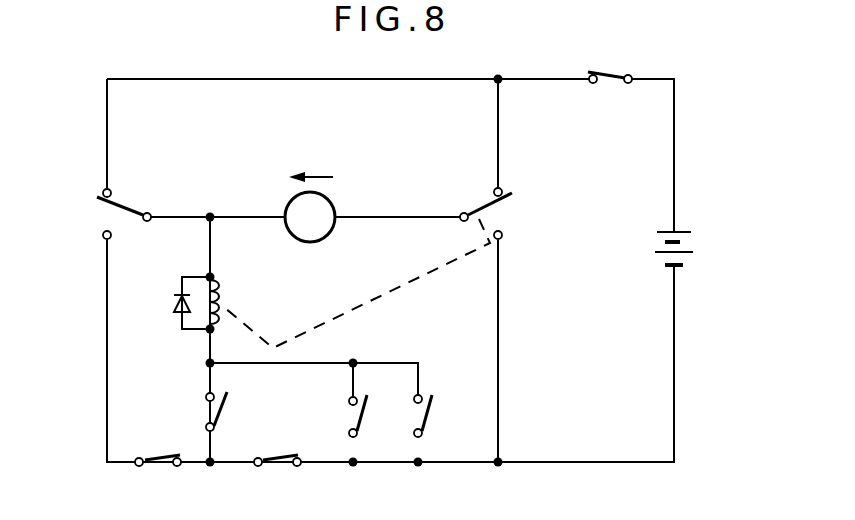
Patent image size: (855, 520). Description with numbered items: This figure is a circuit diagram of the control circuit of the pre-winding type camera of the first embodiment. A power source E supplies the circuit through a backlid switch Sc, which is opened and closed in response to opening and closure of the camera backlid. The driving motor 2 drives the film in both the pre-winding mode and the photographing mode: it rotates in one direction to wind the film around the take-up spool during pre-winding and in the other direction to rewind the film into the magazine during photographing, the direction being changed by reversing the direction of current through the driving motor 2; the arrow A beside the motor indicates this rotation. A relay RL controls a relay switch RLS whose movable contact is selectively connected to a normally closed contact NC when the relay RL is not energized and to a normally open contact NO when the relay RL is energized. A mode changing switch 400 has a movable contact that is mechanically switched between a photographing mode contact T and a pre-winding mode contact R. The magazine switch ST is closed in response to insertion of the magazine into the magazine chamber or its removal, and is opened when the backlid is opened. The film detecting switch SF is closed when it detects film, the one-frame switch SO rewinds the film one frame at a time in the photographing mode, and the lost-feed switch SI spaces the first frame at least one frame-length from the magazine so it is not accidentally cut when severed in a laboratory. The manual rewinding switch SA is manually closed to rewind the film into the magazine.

The mode changing switch 400 is at (97, 214).
The photographing mode contact T is at (83, 186).
The pre-winding mode contact R is at (84, 245).
The driving motor 2 is at (320, 230).
The direction of rotation arrow A is at (322, 178).
The relay switch RLS is at (394, 268).
The normally closed contact NC is at (522, 179).
The normally open contact NO is at (521, 248).
The backlid switch Sc is at (610, 64).
The power source E is at (684, 249).
The relay RL is at (178, 303).
The manual rewinding switch SA is at (230, 411).
The one-frame switch SO is at (373, 416).
The lost-feed switch SI is at (434, 416).
The magazine switch ST is at (158, 478).
The film detecting switch SF is at (277, 478).